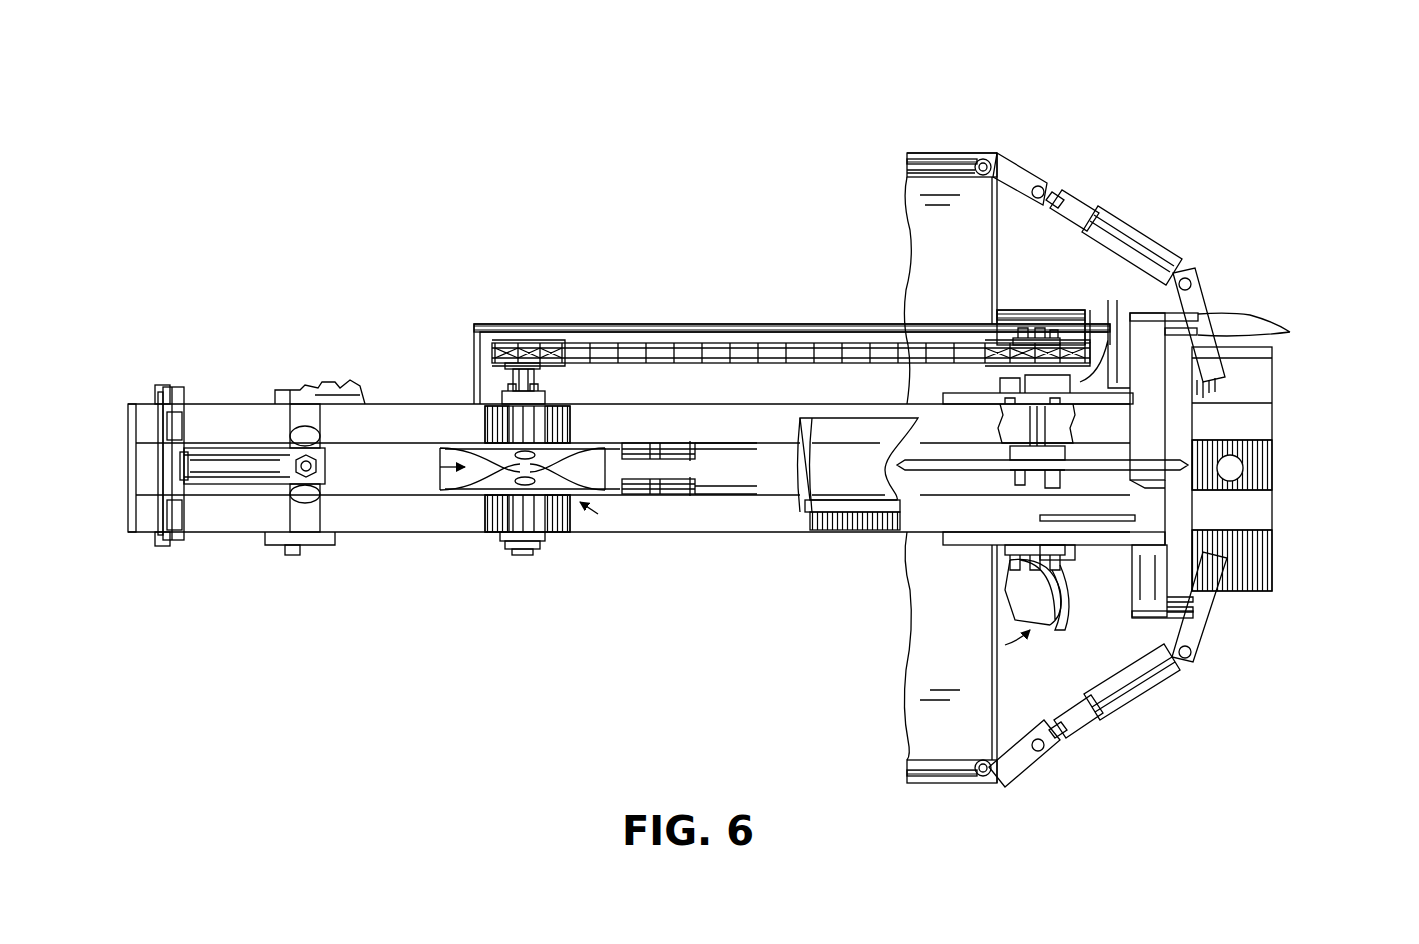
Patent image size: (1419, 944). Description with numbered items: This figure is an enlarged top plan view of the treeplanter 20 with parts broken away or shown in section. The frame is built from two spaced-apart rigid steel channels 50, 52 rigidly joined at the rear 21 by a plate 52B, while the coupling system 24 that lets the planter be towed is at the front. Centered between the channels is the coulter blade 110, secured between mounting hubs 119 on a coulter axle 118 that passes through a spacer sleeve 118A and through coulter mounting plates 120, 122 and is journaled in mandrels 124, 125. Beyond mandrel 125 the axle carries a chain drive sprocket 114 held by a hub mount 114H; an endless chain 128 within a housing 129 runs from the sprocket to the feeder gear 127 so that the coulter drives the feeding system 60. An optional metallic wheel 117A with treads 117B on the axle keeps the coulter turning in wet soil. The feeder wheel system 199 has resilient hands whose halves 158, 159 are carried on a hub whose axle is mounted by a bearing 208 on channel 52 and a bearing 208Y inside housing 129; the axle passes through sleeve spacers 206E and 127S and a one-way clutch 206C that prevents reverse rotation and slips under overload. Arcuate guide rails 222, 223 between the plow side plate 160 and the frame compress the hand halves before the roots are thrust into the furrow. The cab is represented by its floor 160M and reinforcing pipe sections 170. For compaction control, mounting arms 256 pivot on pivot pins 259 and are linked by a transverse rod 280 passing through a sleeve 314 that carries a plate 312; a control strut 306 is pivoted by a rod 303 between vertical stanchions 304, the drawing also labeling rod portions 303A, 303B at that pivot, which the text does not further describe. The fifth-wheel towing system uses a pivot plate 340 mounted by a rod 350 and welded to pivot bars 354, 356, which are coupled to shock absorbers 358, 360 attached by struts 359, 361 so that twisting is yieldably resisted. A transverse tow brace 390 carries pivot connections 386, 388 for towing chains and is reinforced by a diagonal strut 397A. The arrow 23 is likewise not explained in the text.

The planter 20 is at (485, 146).
The rear of the planter 21 is at (135, 330).
The direction arrow 23 is at (1283, 592).
The coupling system 24 is at (1260, 300).
The frame channel 50 is at (255, 418).
The frame channel 52 is at (400, 520).
The plate 52B is at (133, 440).
The rotary feeder system 60 is at (600, 516).
The coulter blade 110 is at (948, 470).
The chain drive sprocket 114 is at (1000, 350).
The hub mount 114H is at (1032, 328).
The metallic wheel 117A is at (997, 612).
The treads 117B is at (1015, 590).
The coulter axle 118 is at (1015, 565).
The spacer sleeve 118A is at (1045, 425).
The mounting hub 119 is at (1010, 458).
The coulter mounting plate 120 is at (975, 545).
The coulter mounting plate 122 is at (943, 395).
The mandrel 124 is at (1070, 560).
The mandrel 125 is at (1110, 306).
The feeder gear 127 is at (495, 350).
The sleeve spacer 127S is at (515, 380).
The endless chain 128 is at (780, 365).
The housing 129 is at (665, 324).
The hand half 158 is at (495, 447).
The hand half 159 is at (572, 460).
The plow side plate 160 is at (1000, 660).
The floor 160M is at (907, 633).
The pipe section 170 is at (948, 160).
The feeder wheel system 199 is at (431, 466).
The one-way clutch 206C is at (525, 425).
The sleeve spacer 206E is at (515, 511).
The bearing 208 is at (545, 549).
The bearing 208Y is at (503, 398).
The guide rail member 222 is at (693, 445).
The guide rail member 223 is at (693, 493).
The mounting arm 256 is at (345, 385).
The pivot pin 259 is at (162, 385).
The transverse rod 280 is at (298, 555).
The rod 303 is at (184, 490).
The plate opening 303A is at (180, 414).
The plate opening 303B is at (180, 530).
The vertical stanchion 304 is at (160, 420).
The control strut 306 is at (325, 467).
The plate 312 is at (320, 427).
The sleeve 314 is at (320, 513).
The pivot plate 340 is at (1275, 545).
The rod 350 is at (1228, 480).
The pivot bar 354 is at (1205, 655).
The pivot bar 356 is at (1202, 290).
The shock absorber 358 is at (1140, 690).
The strut 359 is at (1030, 765).
The shock absorber 360 is at (1135, 243).
The strut 361 is at (1030, 178).
The pivot connection 386 is at (1165, 618).
The pivot connection 388 is at (1290, 332).
The transverse tow brace 390 is at (1160, 425).
The diagonal strut 397A is at (1042, 515).